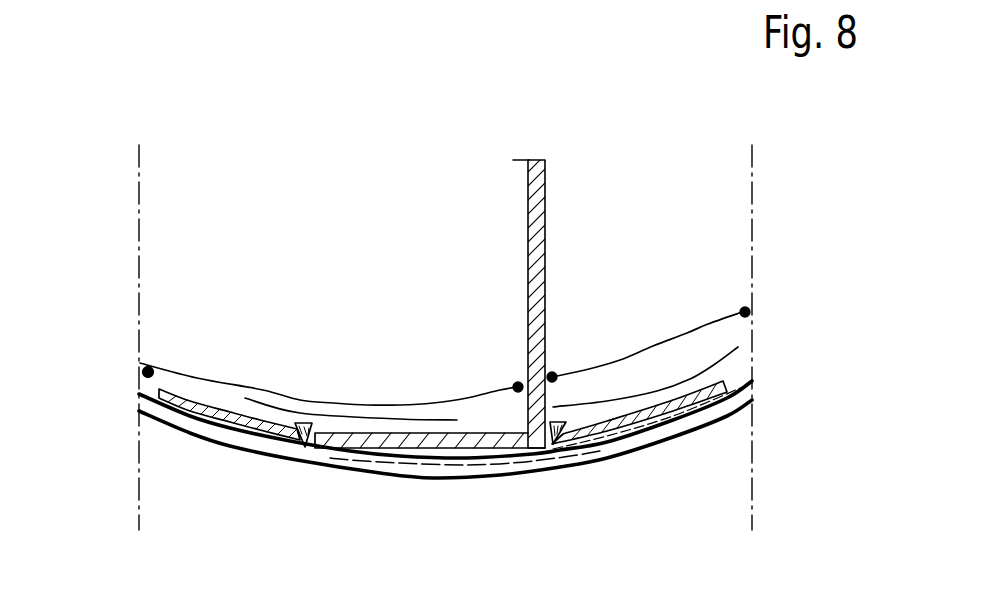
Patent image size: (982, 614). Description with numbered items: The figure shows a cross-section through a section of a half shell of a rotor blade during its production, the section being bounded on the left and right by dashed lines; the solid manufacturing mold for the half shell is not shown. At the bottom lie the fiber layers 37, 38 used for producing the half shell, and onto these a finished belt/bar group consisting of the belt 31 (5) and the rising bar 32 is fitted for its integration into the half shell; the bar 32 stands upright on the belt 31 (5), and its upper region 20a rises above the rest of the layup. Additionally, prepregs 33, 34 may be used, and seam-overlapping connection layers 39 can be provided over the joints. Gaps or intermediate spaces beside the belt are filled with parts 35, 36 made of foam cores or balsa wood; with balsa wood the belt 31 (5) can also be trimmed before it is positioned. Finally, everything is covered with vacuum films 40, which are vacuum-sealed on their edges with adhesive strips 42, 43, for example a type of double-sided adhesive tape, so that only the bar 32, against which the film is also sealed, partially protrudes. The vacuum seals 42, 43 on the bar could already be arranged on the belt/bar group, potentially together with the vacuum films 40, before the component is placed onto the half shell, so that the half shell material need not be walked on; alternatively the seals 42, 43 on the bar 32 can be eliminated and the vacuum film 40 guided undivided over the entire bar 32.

The upper end of post 20a is at (518, 160).
The belt 31 is at (430, 257).
The belt 5 is at (475, 440).
The bar 32 is at (545, 248).
The prepreg 33 is at (205, 420).
The prepreg 34 is at (697, 400).
The part made of foam or balsa wood 35 is at (305, 446).
The part made of foam or balsa wood 36 is at (552, 446).
The fiber layer 37 is at (367, 474).
The fiber layer 38 is at (447, 463).
The seam-overlapping connection layer 39 is at (333, 413).
The vacuum film 40 is at (193, 378).
The adhesive strip 42 is at (554, 374).
The adhesive strip 43 is at (516, 383).